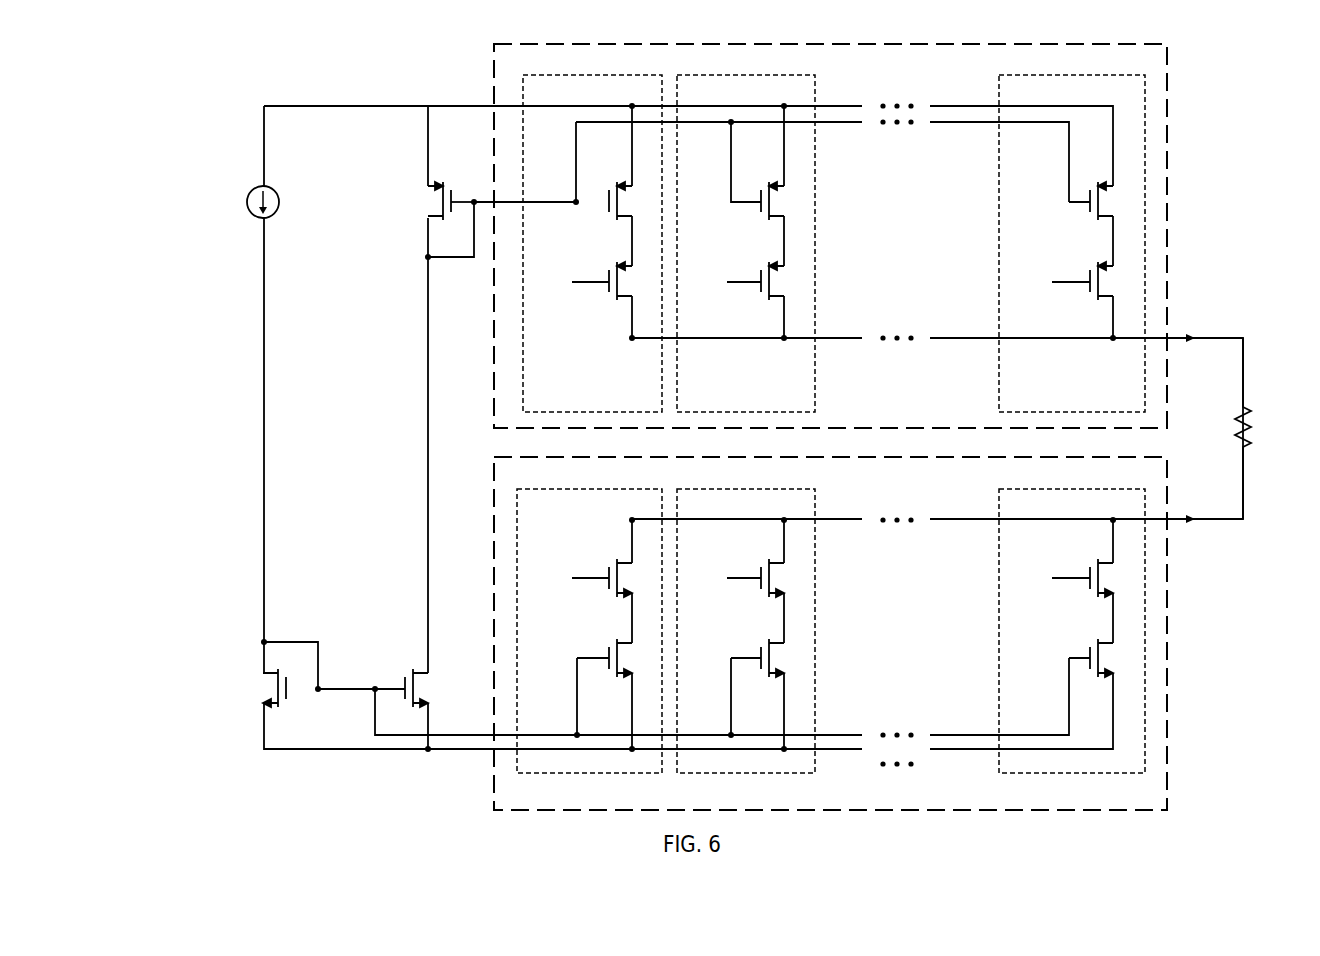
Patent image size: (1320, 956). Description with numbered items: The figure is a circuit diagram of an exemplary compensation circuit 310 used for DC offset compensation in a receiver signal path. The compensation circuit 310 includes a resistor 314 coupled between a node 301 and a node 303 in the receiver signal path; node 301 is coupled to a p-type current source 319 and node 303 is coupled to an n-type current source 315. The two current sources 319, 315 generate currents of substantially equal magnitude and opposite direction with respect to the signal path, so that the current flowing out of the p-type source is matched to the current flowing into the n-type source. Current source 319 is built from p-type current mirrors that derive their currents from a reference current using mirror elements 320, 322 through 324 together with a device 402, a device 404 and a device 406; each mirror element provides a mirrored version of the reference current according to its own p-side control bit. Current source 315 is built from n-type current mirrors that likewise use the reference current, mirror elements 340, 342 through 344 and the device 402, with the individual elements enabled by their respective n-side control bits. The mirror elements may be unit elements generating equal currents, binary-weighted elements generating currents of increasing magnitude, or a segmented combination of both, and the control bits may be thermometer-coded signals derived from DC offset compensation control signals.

The compensation circuit 310 is at (167, 77).
The current source 319 is at (535, 70).
The mirror element 320 is at (562, 100).
The mirror element 322 is at (716, 100).
The mirror element 324 is at (1038, 100).
The current source 315 is at (535, 485).
The mirror element 340 is at (557, 513).
The mirror element 342 is at (716, 513).
The mirror element 344 is at (1038, 513).
The device 402 is at (272, 688).
The device 404 is at (403, 683).
The device 406 is at (437, 205).
The node 301 is at (1243, 338).
The node 303 is at (1243, 519).
The resistor 314 is at (1253, 412).